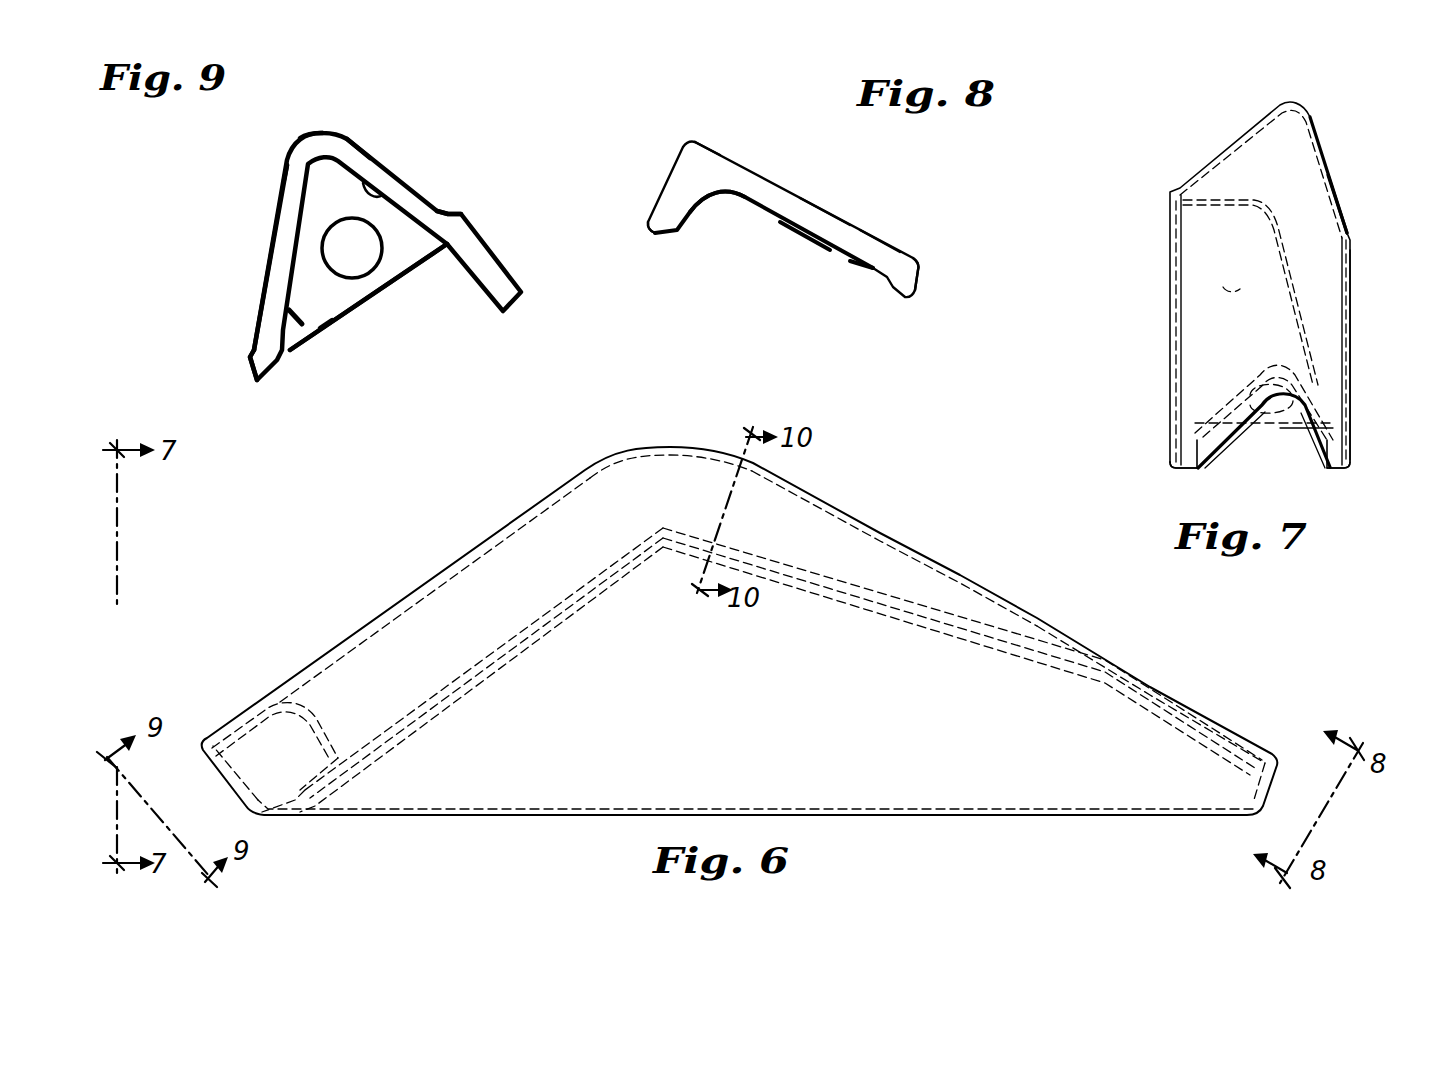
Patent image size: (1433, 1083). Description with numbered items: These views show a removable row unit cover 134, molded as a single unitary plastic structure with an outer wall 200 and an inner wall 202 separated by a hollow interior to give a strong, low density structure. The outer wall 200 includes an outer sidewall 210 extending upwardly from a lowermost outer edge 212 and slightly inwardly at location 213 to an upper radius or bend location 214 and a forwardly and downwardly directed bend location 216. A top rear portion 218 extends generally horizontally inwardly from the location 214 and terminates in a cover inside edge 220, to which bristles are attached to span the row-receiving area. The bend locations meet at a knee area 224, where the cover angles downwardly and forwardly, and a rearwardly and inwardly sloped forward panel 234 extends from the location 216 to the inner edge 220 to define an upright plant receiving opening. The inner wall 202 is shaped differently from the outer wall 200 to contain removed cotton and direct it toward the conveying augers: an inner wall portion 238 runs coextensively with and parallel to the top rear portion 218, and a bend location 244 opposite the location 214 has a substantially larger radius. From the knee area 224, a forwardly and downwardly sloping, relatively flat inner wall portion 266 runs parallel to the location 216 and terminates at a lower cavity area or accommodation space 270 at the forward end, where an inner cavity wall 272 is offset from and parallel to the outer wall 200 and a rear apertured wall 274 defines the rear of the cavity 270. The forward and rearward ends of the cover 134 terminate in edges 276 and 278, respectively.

In FIG. 6, the removable row unit cover 134 is at (280, 653).
In FIG. 9, the outer wall 200 is at (278, 157).
In FIG. 8, the outer wall 200 is at (773, 160).
In FIG. 7, the outer wall 200 is at (1326, 124).
In FIG. 6, the outer wall 200 is at (370, 617).
In FIG. 9, the inner wall 202 is at (298, 322).
In FIG. 8, the inner wall 202 is at (795, 248).
In FIG. 7, the inner wall 202 is at (1272, 273).
In FIG. 6, the inner wall 202 is at (613, 592).
In FIG. 9, the outer sidewall 210 is at (507, 270).
In FIG. 7, the outer sidewall 210 is at (1350, 303).
In FIG. 6, the outer sidewall 210 is at (770, 696).
In FIG. 8, the lowermost outer edge 212 is at (650, 236).
In FIG. 7, the lowermost outer edge 212 is at (1333, 473).
In FIG. 6, the lowermost outer edge 212 is at (557, 817).
In FIG. 7, the inward angle location 213 is at (1347, 230).
In FIG. 8, the upper radius or bend location 214 is at (696, 137).
In FIG. 6, the upper radius or bend location 214 is at (960, 570).
In FIG. 9, the forwardly and downwardly directed radius or bend location 216 is at (318, 132).
In FIG. 6, the forwardly and downwardly directed radius or bend location 216 is at (537, 507).
In FIG. 8, the top rear portion 218 is at (875, 235).
In FIG. 6, the top rear portion 218 is at (1133, 677).
In FIG. 9, the cover inside edge 220 is at (250, 377).
In FIG. 8, the cover inside edge 220 is at (920, 278).
In FIG. 7, the cover inside edge 220 is at (1177, 470).
In FIG. 6, the cover inside edge 220 is at (887, 610).
In FIG. 6, the knee area 224 is at (650, 447).
In FIG. 9, the forward panel 234 is at (275, 230).
In FIG. 8, the inner wall portion 238 is at (857, 265).
In FIG. 8, the bend location 244 is at (720, 200).
In FIG. 9, the inner wall portion 266 is at (380, 287).
In FIG. 6, the inner wall portion 266 is at (420, 720).
In FIG. 9, the lower cavity area or accommodation space 270 is at (329, 294).
In FIG. 7, the lower cavity area or accommodation space 270 is at (1280, 427).
In FIG. 6, the lower cavity area or accommodation space 270 is at (277, 777).
In FIG. 9, the inner cavity wall 272 is at (380, 197).
In FIG. 9, the rear apertured wall 274 is at (397, 227).
In FIG. 9, the forward edge 276 is at (353, 140).
In FIG. 6, the forward edge 276 is at (192, 742).
In FIG. 8, the rearward edge 278 is at (817, 218).
In FIG. 6, the rearward edge 278 is at (1267, 793).